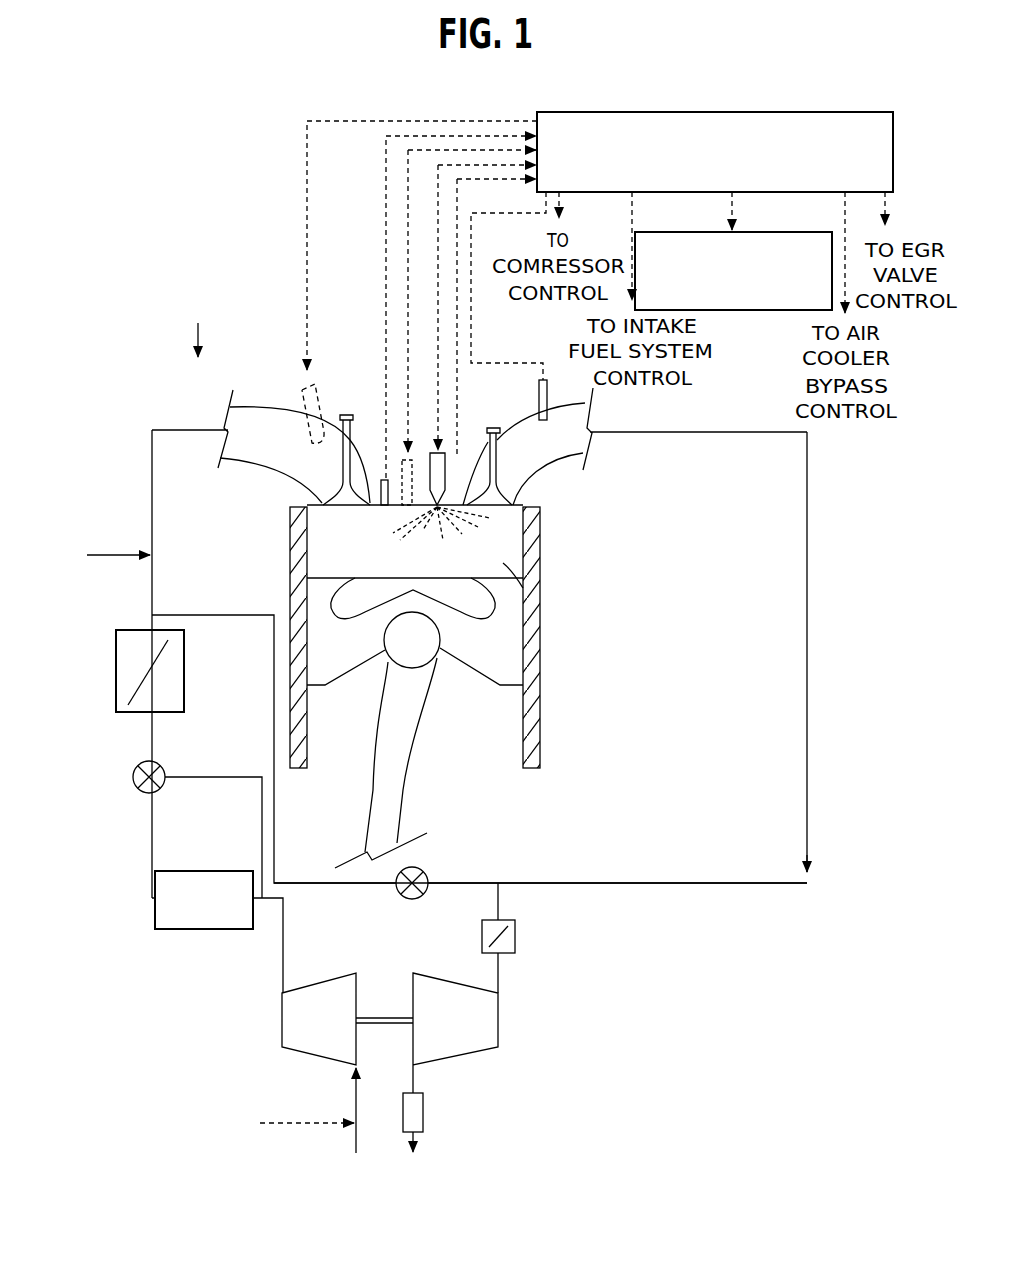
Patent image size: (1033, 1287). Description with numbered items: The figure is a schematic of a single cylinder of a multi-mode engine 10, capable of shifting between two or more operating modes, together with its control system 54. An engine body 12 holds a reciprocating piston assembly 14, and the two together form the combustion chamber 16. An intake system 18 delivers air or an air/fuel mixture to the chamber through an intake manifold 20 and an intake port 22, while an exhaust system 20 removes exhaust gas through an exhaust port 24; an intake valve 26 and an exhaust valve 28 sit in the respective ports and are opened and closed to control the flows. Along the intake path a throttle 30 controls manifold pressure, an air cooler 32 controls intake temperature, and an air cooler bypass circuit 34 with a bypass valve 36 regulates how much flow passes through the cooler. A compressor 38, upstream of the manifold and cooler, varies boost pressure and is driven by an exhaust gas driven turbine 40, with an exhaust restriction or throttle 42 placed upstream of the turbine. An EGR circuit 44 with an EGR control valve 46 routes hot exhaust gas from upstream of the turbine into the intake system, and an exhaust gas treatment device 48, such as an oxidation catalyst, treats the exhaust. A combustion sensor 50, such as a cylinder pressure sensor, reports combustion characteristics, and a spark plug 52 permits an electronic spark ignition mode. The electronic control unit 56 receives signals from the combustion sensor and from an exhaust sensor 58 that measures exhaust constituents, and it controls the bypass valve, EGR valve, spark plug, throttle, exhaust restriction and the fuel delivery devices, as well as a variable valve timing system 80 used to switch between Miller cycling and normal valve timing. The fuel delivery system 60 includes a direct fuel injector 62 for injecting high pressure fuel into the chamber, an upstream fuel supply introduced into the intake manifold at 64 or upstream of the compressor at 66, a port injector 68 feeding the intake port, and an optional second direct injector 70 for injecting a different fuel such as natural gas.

The multi-mode engine 10 is at (240, 283).
The engine body 12 is at (538, 562).
The piston assembly 14 is at (505, 662).
The combustion chamber 16 is at (525, 580).
The intake system 18 is at (152, 430).
The exhaust system 20 is at (150, 570).
The intake port 22 is at (262, 462).
The exhaust port 24 is at (541, 467).
The intake valve 26 is at (346, 418).
The exhaust valve 28 is at (496, 435).
The throttle 30 is at (116, 695).
The air cooler 32 is at (205, 930).
The air cooler bypass circuit 34 is at (240, 776).
The bypass valve 36 is at (165, 790).
The compressor 38 is at (282, 1020).
The turbine 40 is at (500, 1035).
The exhaust restriction or throttle 42 is at (517, 940).
The EGR circuit 44 is at (458, 880).
The EGR control valve 46 is at (412, 900).
The exhaust gas treatment device 48 is at (425, 1120).
The combustion sensor 50 is at (382, 478).
The spark plug 52 is at (411, 445).
The control system 54 is at (445, 118).
The electronic control unit 56 is at (730, 112).
The exhaust sensor 58 is at (548, 410).
The fuel delivery system 60 is at (247, 372).
The direct fuel injector 62 is at (436, 452).
The intake manifold fuel supply location 64 is at (108, 548).
The upstream fuel supply location 66 is at (298, 1120).
The port injector 68 is at (302, 390).
The second direct injector 70 is at (460, 457).
The variable valve timing system 80 is at (684, 231).